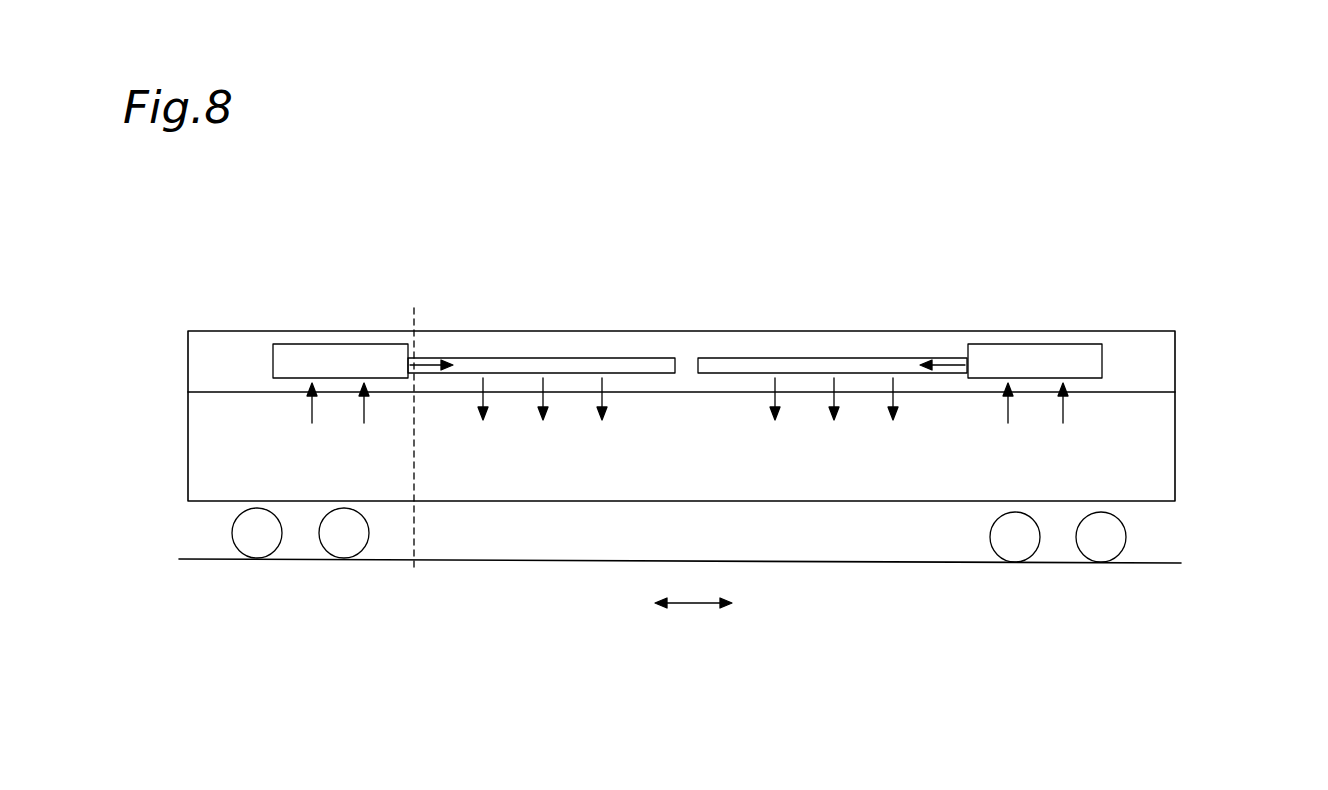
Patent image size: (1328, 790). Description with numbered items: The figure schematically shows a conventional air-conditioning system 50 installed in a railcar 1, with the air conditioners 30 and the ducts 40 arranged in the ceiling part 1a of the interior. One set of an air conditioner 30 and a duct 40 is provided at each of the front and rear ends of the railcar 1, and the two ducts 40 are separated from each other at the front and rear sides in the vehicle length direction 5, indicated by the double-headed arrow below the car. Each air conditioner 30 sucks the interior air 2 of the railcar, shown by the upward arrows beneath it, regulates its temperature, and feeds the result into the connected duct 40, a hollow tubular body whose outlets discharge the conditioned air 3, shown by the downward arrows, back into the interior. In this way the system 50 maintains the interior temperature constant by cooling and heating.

The railcar 1 is at (1178, 412).
The ceiling part 1a is at (198, 363).
The interior air 2 is at (310, 412).
The conditioned air 3 is at (478, 396).
The vehicle length direction 5 is at (697, 605).
The air conditioner 30 is at (318, 343).
The duct 40 is at (573, 357).
The air-conditioning system 50 is at (744, 348).